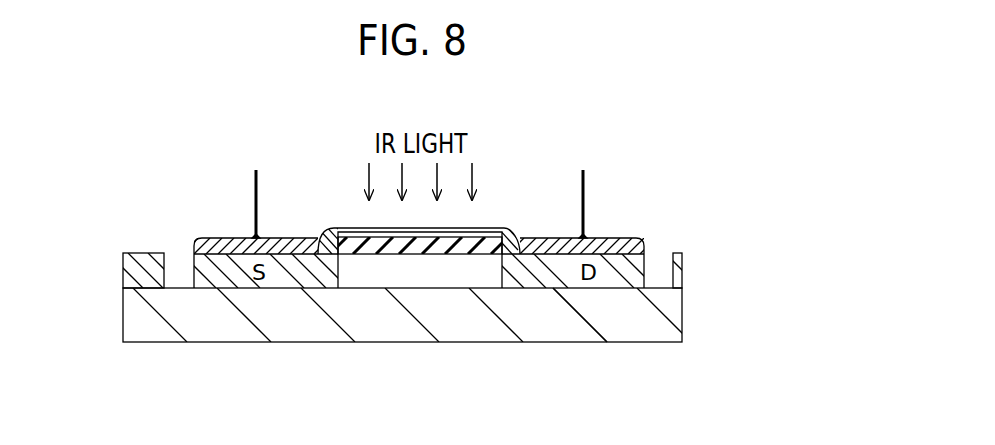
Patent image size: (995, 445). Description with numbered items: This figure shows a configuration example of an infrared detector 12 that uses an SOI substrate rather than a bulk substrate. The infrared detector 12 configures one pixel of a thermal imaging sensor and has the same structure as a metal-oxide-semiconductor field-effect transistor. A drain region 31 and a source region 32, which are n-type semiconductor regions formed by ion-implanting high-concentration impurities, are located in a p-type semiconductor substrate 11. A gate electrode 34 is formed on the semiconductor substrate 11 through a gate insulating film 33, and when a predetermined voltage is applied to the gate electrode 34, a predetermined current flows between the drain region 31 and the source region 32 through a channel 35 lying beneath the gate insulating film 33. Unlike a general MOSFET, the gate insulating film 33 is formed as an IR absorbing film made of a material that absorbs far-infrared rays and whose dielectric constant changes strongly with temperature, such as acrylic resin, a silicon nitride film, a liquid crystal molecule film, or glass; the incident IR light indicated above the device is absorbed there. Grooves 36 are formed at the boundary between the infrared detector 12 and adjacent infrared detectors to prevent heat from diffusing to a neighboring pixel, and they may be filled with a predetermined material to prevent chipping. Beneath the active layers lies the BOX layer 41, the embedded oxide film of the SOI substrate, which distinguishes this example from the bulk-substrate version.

The semiconductor substrate 11 is at (684, 311).
The infrared detector 12 is at (656, 413).
The drain region 31 is at (621, 262).
The source region 32 is at (222, 262).
The gate insulating film 33 is at (463, 256).
The gate electrode 34 is at (478, 232).
The channel 35 is at (380, 262).
The grooves 36 is at (178, 258).
The BOX layer 41 is at (577, 328).